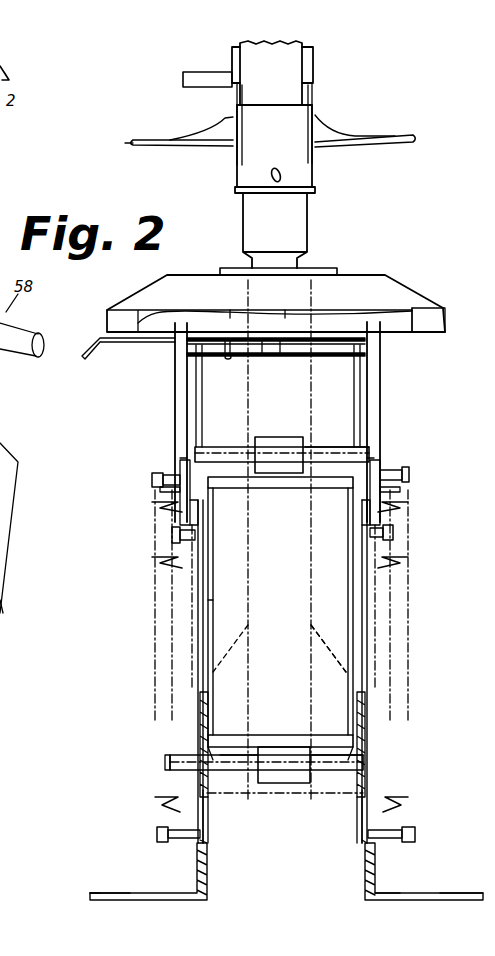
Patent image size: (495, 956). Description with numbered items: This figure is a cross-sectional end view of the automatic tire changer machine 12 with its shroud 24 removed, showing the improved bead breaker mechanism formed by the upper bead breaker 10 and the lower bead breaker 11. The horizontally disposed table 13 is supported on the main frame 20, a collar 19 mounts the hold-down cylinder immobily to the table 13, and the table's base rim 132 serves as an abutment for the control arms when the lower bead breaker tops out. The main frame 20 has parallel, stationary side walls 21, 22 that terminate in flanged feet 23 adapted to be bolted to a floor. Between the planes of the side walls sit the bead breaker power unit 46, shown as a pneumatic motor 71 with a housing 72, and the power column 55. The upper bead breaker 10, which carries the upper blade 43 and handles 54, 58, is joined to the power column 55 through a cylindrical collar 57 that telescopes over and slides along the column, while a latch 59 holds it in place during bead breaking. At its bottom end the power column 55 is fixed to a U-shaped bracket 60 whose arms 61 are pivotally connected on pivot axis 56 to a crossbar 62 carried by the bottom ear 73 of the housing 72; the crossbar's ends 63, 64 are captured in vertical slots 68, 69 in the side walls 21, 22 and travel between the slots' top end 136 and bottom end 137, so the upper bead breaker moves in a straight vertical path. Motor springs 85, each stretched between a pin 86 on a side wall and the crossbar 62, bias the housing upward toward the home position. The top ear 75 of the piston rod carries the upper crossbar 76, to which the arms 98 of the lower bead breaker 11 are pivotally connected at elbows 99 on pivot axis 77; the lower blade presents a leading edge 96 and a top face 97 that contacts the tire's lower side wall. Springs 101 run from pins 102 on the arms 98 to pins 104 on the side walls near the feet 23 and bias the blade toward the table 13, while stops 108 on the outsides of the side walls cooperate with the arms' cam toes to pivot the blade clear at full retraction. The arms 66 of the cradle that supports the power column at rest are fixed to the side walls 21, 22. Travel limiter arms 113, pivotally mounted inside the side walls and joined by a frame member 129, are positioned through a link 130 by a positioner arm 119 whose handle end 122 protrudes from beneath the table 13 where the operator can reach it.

The upper bead breaker 10 is at (119, 145).
The lower bead breaker 11 is at (432, 323).
The automatic tire changer machine 12 is at (60, 858).
The table 13 is at (395, 292).
The collar 19 is at (303, 268).
The main frame 20 is at (386, 873).
The side wall 21 is at (208, 860).
The side wall 22 is at (366, 864).
The flanged feet 23 is at (113, 890).
The shroud 24 is at (2, 653).
The upper blade 43 is at (208, 148).
The bead breaker power unit 46 is at (220, 622).
The handle 54 is at (182, 77).
The power column 55 is at (299, 71).
The pivot axis 56 is at (172, 766).
The collar 57 is at (296, 118).
The handle 58 is at (280, 169).
The latch 59 is at (316, 191).
The U-shaped bracket 60 is at (345, 649).
The bracket arms 61 is at (210, 712).
The crossbar 62 is at (248, 755).
The crossbar end 63 is at (165, 758).
The crossbar end 64 is at (388, 762).
The cradle arms 66 is at (192, 522).
The vertical slot 68 is at (209, 820).
The vertical slot 69 is at (364, 818).
The pneumatic motor 71 is at (362, 603).
The housing 72 is at (280, 540).
The bottom ear 73 is at (294, 776).
The top ear 75 is at (283, 437).
The crossbar 76 is at (232, 447).
The pivot axis 77 is at (332, 447).
The motor springs 85 is at (172, 672).
The pin 86 is at (172, 545).
The leading edge 96 is at (290, 318).
The top face 97 is at (236, 318).
The arm 98 is at (180, 392).
The elbows 99 is at (180, 458).
The spring 101 is at (154, 610).
The pin 102 is at (152, 479).
The pin 104 is at (156, 835).
The stop 108 is at (175, 519).
The travel limiter arm 113 is at (208, 395).
The positioner arm 119 is at (283, 358).
The handle end 122 is at (98, 352).
The frame member 129 is at (264, 358).
The link 130 is at (232, 343).
The base rim 132 is at (428, 334).
The top end of vertical slots 136 is at (215, 750).
The bottom end of vertical slots 137 is at (208, 840).